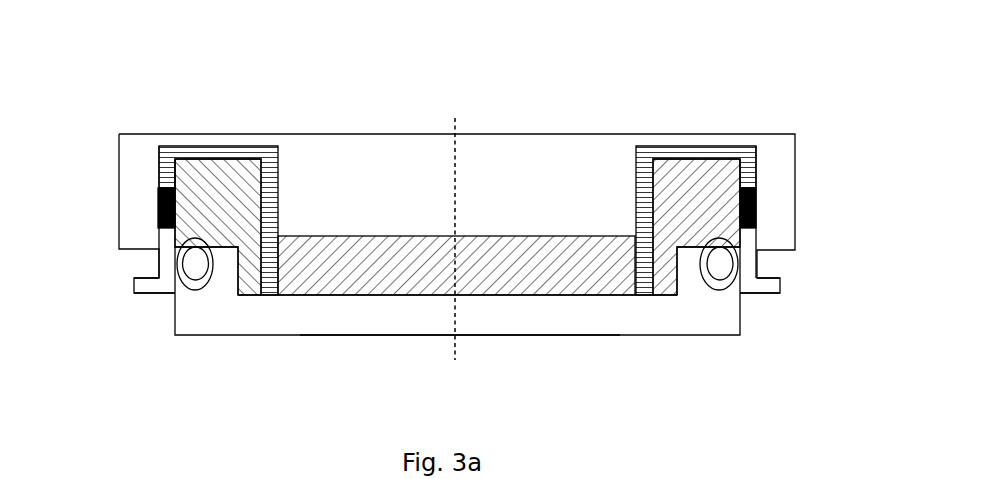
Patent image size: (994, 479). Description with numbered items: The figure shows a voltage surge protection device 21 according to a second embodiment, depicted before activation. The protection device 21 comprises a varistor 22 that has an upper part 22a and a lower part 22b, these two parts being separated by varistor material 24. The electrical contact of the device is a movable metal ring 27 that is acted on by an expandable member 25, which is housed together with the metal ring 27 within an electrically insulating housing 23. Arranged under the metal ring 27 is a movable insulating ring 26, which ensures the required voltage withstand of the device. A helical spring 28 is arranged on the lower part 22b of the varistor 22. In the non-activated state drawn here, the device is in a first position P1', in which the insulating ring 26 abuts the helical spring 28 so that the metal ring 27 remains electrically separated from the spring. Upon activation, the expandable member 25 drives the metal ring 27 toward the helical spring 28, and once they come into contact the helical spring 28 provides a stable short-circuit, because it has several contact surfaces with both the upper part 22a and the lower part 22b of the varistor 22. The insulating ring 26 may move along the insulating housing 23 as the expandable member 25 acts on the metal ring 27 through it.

The voltage surge protection device 21 is at (685, 42).
The varistor 22 is at (793, 230).
The upper part 22a is at (428, 150).
The lower part 22b is at (502, 327).
The electrically insulating housing 23 is at (212, 175).
The varistor material 24 is at (610, 272).
The expandable member 25 is at (288, 113).
The movable insulating ring 26 is at (143, 286).
The movable metal ring 27 is at (118, 165).
The helical spring 28 is at (203, 281).
The first position P1' is at (114, 241).